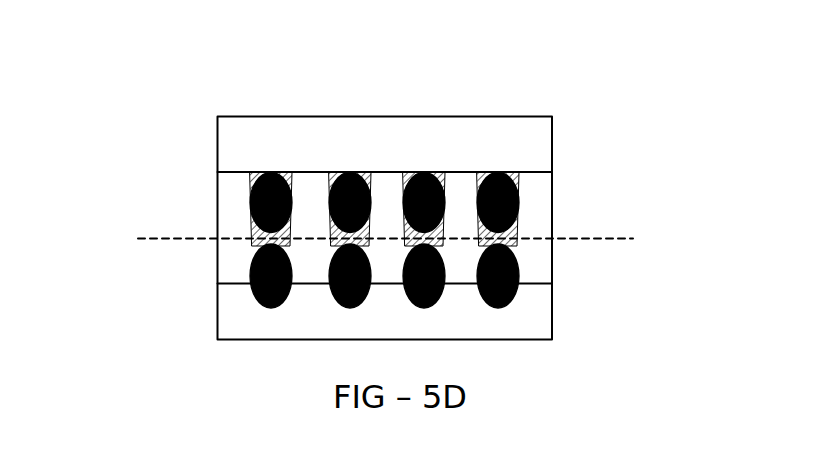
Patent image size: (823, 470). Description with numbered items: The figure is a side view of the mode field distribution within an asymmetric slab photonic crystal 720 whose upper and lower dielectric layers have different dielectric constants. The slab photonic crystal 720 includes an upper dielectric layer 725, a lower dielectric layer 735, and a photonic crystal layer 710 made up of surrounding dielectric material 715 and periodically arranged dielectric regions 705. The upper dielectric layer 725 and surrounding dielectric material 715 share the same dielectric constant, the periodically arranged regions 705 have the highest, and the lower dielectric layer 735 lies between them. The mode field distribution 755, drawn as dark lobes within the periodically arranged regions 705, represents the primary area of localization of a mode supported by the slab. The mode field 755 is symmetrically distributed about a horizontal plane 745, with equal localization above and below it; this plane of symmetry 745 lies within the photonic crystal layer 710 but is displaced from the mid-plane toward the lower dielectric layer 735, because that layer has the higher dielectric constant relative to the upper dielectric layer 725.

The periodically arranged dielectric regions 705 is at (510, 243).
The photonic crystal layer 710 is at (553, 213).
The surrounding dielectric material 715 is at (233, 260).
The slab photonic crystal 720 is at (598, 90).
The upper dielectric layer 725 is at (292, 141).
The lower dielectric layer 735 is at (263, 308).
The horizontal plane 745 is at (607, 240).
The mode field distribution 755 is at (292, 197).